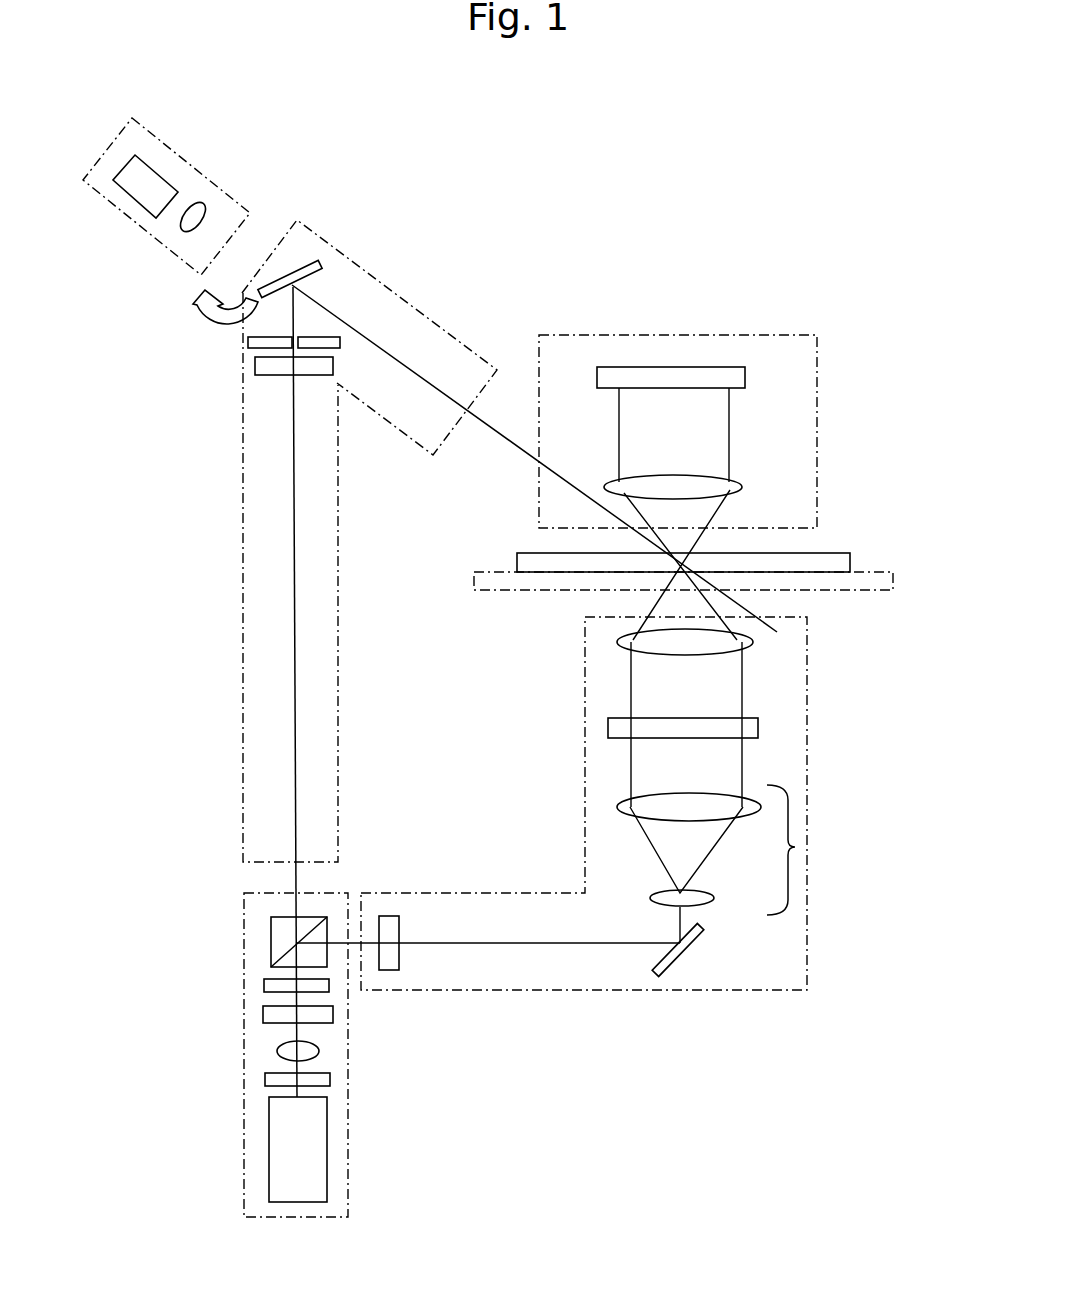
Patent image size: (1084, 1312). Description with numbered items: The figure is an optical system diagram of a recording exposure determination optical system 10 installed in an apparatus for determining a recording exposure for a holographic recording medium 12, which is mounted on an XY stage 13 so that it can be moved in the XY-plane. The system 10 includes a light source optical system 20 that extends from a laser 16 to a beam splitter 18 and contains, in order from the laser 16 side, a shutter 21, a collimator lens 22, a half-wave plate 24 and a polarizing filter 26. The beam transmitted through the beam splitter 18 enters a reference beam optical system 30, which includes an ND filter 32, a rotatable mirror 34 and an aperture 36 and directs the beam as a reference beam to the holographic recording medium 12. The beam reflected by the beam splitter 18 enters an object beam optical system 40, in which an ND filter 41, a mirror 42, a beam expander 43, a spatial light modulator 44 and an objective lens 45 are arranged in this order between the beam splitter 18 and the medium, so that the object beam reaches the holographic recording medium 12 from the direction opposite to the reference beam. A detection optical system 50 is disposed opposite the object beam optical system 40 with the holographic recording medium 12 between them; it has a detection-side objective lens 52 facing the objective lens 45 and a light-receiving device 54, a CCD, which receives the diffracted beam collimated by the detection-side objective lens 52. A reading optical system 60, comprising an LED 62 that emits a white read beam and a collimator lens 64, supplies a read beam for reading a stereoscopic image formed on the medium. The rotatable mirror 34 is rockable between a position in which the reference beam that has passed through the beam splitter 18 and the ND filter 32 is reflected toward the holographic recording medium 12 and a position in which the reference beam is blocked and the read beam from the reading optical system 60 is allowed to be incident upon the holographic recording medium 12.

The recording exposure determination optical system 10 is at (614, 176).
The holographic recording medium 12 is at (807, 553).
The XY stage 13 is at (867, 571).
The laser 16 is at (269, 1148).
The beam splitter 18 is at (271, 947).
The light source optical system 20 is at (350, 1100).
The shutter 21 is at (265, 1078).
The collimator lens 22 is at (277, 1050).
The half-wave plate 24 is at (263, 1012).
The polarizing filter 26 is at (264, 983).
The reference beam optical system 30 is at (338, 585).
The ND filter 32 is at (313, 377).
The rotatable mirror 34 is at (336, 251).
The aperture 36 is at (247, 342).
The object beam optical system 40 is at (427, 893).
The ND filter 41 is at (399, 921).
The mirror 42 is at (683, 955).
The beam expander 43 is at (797, 847).
The spatial light modulator 44 is at (758, 727).
The objective lens 45 is at (752, 642).
The detection optical system 50 is at (720, 335).
The detection-side objective lens 52 is at (742, 487).
The light-receiving device 54 is at (747, 377).
The reading optical system 60 is at (173, 125).
The LED 62 is at (120, 187).
The collimator lens 64 is at (173, 227).